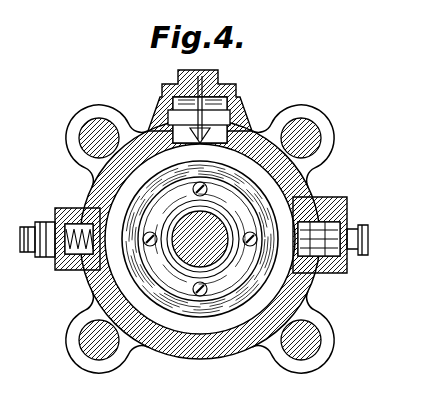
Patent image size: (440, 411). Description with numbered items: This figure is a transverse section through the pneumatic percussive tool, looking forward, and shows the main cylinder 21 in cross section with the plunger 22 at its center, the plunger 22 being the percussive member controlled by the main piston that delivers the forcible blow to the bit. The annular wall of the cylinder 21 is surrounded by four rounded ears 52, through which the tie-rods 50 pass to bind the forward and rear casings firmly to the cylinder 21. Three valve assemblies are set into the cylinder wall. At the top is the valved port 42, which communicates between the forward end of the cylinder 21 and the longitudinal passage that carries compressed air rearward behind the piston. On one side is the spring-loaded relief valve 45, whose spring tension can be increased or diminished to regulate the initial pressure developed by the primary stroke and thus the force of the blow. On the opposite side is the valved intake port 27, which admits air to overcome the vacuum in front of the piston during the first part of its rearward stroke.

The cylindrical bore 21 is at (305, 296).
The plunger 22 is at (200, 239).
The valved intake port 27 is at (328, 206).
The valved port 42 is at (242, 114).
The relief valve 45 is at (78, 212).
The tie-rods 50 is at (100, 120).
The ears 52 is at (74, 119).